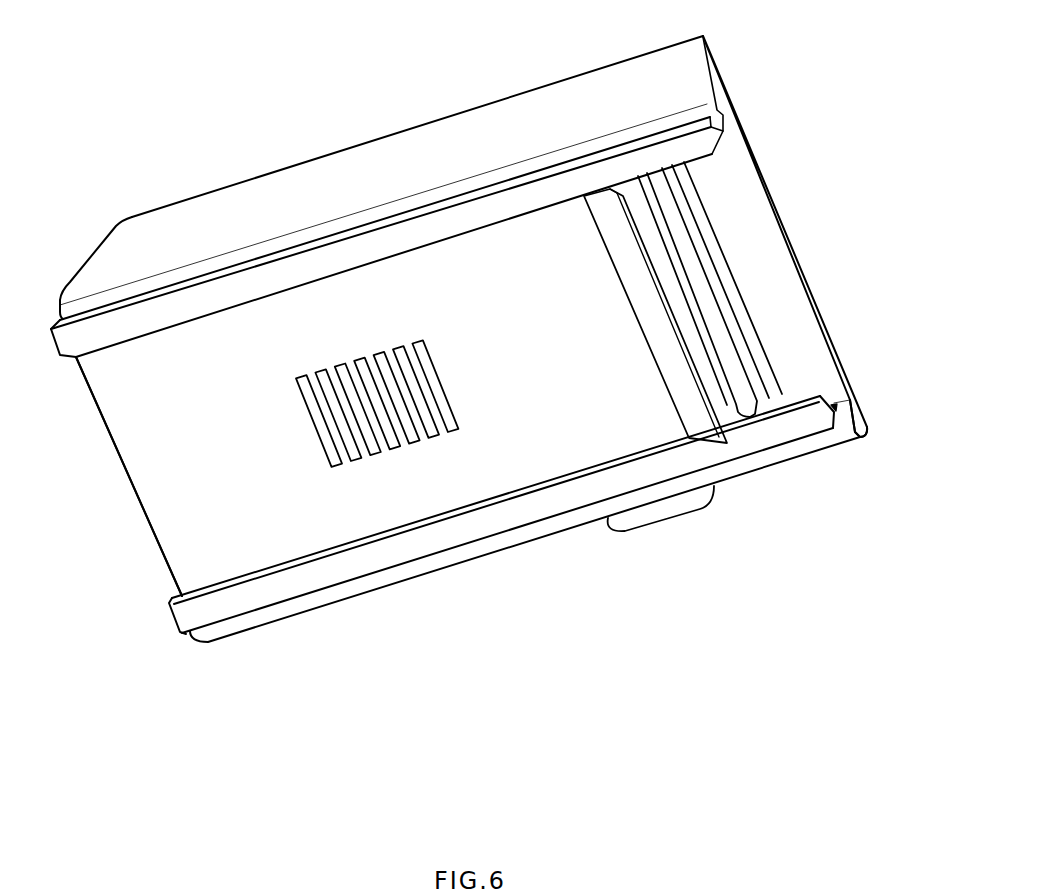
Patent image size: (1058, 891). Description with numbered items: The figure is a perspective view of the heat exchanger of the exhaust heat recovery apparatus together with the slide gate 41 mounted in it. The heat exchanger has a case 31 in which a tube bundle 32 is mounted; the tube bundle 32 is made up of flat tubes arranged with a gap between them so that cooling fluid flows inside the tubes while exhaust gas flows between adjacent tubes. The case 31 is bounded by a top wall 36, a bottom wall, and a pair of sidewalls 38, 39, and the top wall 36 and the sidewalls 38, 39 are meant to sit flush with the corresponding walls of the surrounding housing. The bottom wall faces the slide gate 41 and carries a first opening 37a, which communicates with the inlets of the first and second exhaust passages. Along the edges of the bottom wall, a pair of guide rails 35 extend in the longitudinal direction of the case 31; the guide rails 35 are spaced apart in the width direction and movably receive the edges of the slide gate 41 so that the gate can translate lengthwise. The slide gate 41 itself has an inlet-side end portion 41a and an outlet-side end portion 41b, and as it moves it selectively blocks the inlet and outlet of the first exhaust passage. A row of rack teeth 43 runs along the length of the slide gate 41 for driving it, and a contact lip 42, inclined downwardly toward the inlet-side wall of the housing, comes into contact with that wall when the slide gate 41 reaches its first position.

The case 31 is at (552, 83).
The tube bundle 32 is at (688, 188).
The guide rails 35 is at (453, 220).
The top wall 36 is at (783, 207).
The first opening 37a is at (842, 395).
The sidewall 38 is at (543, 537).
The sidewall 39 is at (268, 188).
The slide gate 41 is at (283, 538).
The inlet-side end portion 41a is at (676, 306).
The outlet-side end portion 41b is at (115, 481).
The contact lip 42 is at (686, 390).
The rack teeth 43 is at (350, 447).